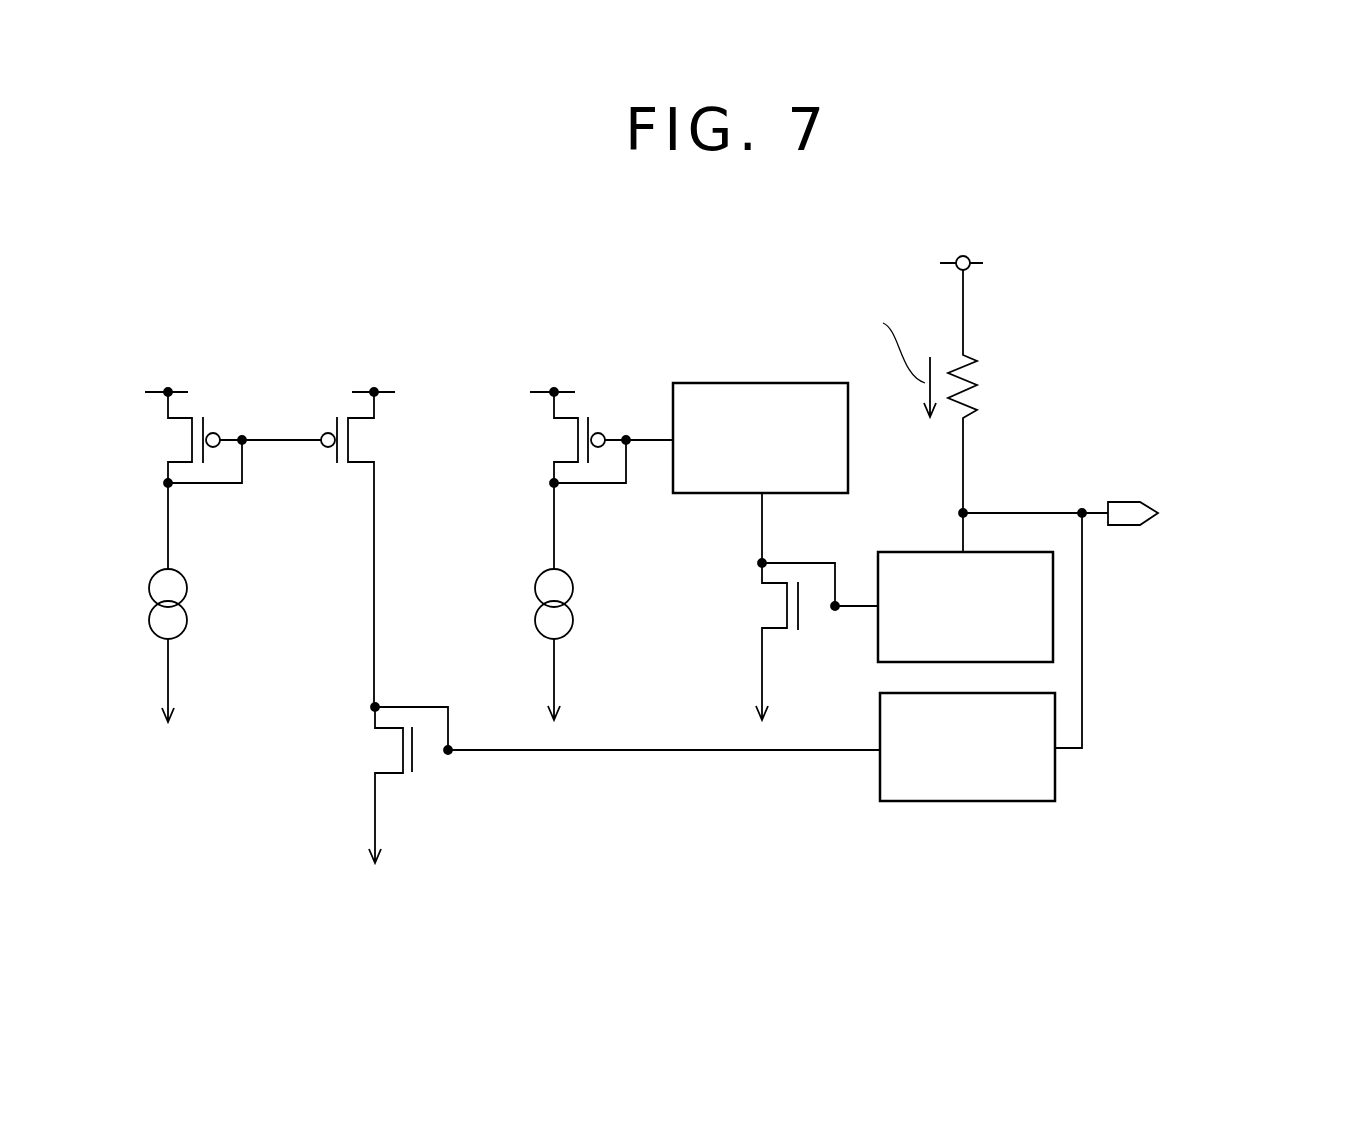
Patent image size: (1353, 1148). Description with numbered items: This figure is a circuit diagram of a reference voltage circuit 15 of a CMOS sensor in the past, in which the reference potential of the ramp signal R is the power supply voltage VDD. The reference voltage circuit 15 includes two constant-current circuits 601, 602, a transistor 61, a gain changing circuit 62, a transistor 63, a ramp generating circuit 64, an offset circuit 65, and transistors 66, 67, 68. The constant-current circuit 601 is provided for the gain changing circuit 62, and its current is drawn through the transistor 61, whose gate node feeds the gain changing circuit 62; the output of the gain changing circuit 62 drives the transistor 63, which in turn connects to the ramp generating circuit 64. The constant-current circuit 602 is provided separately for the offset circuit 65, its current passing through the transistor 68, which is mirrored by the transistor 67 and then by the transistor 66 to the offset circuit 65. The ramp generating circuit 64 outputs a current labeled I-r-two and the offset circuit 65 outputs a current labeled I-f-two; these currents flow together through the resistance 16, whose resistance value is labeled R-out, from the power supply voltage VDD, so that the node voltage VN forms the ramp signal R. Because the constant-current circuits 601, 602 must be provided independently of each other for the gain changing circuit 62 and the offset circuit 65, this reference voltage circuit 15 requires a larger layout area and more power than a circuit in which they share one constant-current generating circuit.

The reference voltage circuit 15 is at (697, 565).
The resistance 16 is at (985, 378).
The constant-current circuit 601 is at (535, 620).
The constant-current circuit 602 is at (190, 621).
The transistor 61 is at (577, 440).
The gain changing circuit 62 is at (762, 383).
The transistor 63 is at (785, 606).
The ramp generating circuit 64 is at (930, 552).
The offset circuit 65 is at (967, 801).
The transistor 66 is at (400, 750).
The transistor 67 is at (350, 441).
The transistor 68 is at (190, 440).